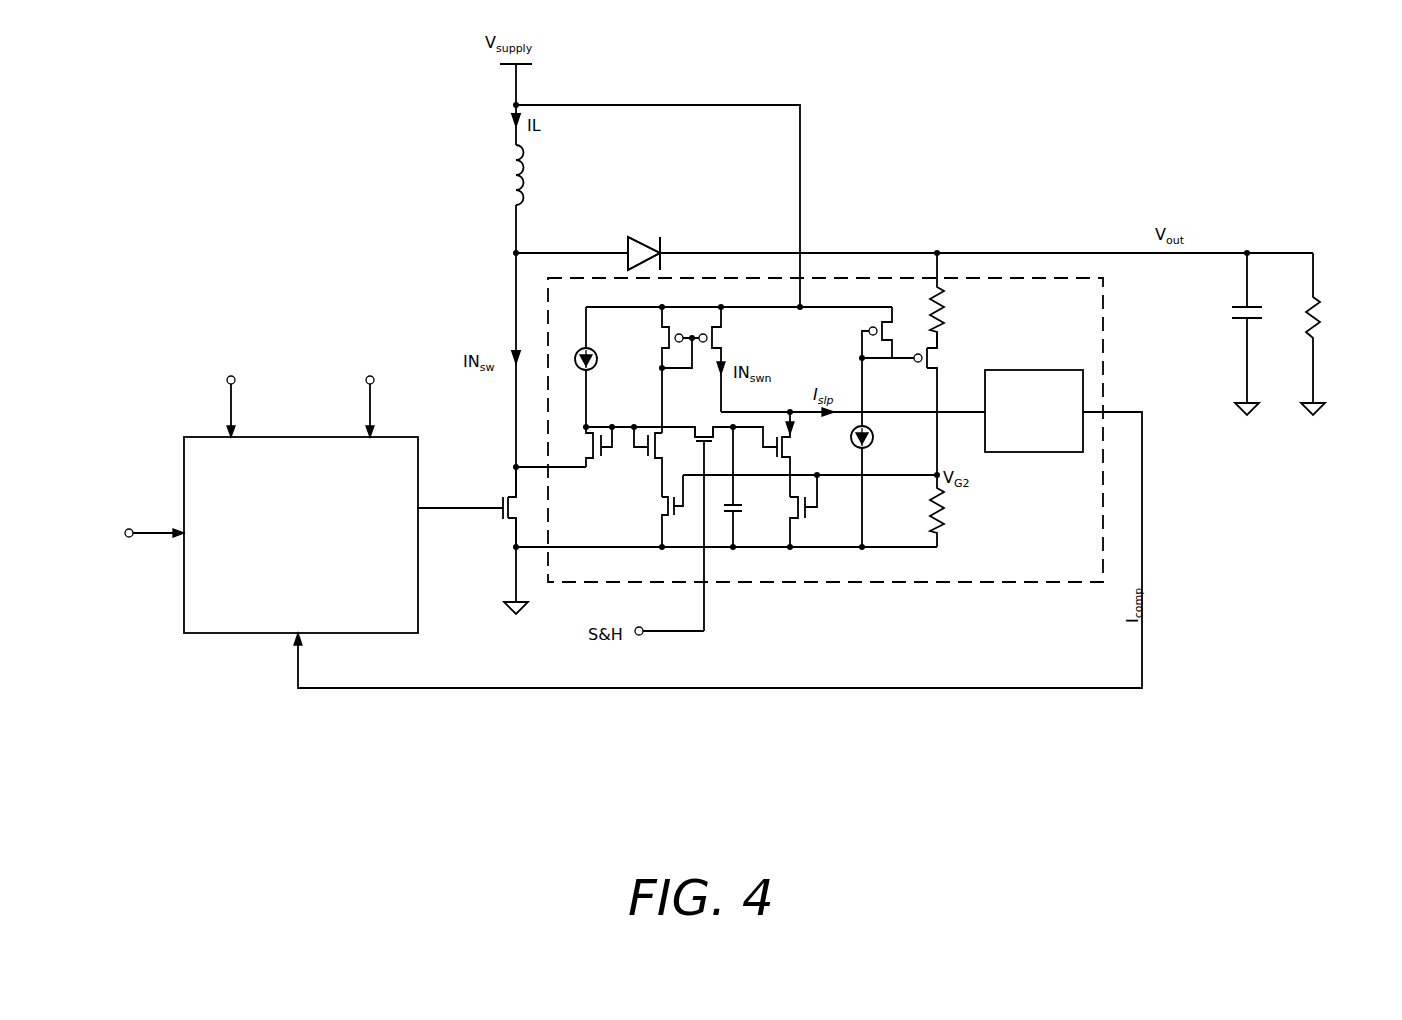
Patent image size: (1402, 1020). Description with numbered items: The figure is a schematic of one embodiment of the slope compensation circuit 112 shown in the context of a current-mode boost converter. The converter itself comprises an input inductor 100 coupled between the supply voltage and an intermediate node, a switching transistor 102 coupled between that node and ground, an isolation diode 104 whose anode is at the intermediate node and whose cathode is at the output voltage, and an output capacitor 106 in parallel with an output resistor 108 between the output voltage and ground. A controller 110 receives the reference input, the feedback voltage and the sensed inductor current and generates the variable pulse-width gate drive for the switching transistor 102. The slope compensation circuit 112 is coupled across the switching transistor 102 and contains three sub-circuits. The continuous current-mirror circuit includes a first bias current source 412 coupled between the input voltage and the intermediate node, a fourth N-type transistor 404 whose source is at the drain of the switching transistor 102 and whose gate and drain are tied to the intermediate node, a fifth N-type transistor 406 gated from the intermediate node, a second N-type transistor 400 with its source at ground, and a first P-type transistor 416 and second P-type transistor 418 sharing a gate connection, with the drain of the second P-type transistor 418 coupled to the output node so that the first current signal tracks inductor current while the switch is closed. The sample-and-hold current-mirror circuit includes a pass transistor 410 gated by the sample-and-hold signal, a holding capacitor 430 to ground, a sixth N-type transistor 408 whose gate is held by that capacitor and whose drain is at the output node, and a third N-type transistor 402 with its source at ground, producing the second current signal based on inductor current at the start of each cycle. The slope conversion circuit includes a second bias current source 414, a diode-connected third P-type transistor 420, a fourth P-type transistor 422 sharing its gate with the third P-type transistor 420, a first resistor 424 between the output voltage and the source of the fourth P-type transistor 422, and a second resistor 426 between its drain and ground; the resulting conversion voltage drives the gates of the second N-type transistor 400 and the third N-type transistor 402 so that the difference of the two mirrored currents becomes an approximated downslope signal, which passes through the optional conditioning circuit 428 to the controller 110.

The input inductor 100 is at (534, 178).
The switching transistor 102 is at (515, 494).
The isolation diode 104 is at (643, 237).
The output capacitor 106 is at (1240, 322).
The output resistor 108 is at (1316, 298).
The controller 110 is at (268, 437).
The slope compensation circuit 112 is at (940, 584).
The transistor N2 400 is at (664, 518).
The transistor N3 402 is at (795, 519).
The transistor N4 404 is at (587, 470).
The transistor N5 406 is at (650, 460).
The transistor N6 408 is at (788, 430).
The pass transistor 410 is at (694, 426).
The first bias current source 412 is at (592, 370).
The second bias current source 414 is at (868, 448).
The transistor M1 416 is at (669, 326).
The transistor M2 418 is at (714, 326).
The transistor M3 420 is at (890, 305).
The transistor M4 422 is at (933, 350).
The first resistor 424 is at (940, 298).
The second resistor 426 is at (940, 530).
The conditioning circuit 428 is at (1033, 453).
The holding capacitor 430 is at (737, 513).